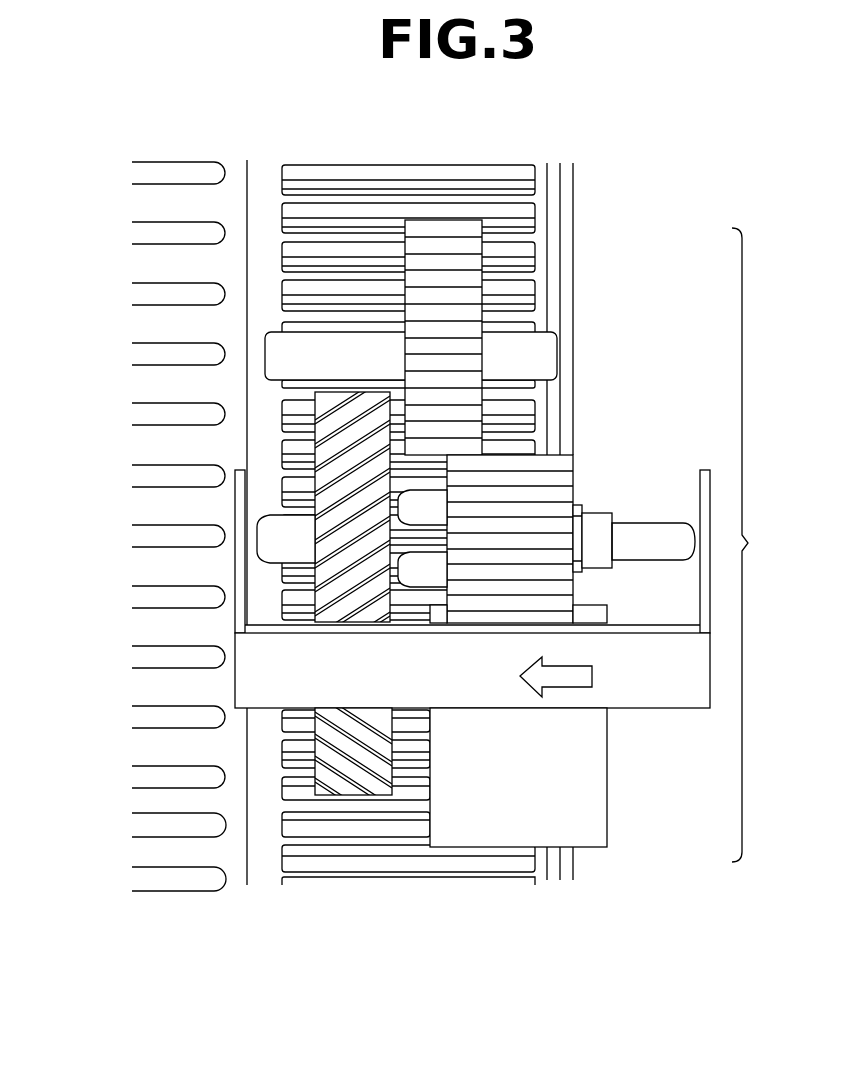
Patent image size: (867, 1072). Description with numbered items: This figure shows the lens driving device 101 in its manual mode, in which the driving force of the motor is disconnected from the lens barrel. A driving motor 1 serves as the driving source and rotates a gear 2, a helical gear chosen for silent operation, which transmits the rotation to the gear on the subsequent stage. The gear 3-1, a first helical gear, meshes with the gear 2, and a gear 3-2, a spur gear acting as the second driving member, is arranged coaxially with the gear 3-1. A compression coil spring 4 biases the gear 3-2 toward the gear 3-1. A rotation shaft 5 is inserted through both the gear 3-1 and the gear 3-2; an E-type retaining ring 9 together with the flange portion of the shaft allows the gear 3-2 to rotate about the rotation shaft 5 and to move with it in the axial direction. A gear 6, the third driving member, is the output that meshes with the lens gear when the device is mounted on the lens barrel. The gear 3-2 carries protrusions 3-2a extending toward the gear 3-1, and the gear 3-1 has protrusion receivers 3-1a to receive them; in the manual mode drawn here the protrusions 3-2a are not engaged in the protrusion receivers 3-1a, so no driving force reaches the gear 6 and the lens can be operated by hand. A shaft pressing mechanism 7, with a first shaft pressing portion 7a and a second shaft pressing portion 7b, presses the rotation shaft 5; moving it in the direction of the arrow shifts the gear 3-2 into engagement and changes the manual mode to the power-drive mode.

The driving motor 1 is at (583, 805).
The gear 2 is at (333, 778).
The gear 3-1 is at (330, 465).
The protrusion receivers 3-1a is at (365, 492).
The gear 3-2 is at (510, 482).
The protrusions 3-2a is at (427, 503).
The compression coil spring 4 is at (598, 514).
The rotation shaft 5 is at (256, 542).
The gear 6 is at (468, 247).
The shaft pressing mechanism 7 is at (658, 700).
The first shaft pressing portion 7a is at (241, 506).
The second shaft pressing portion 7b is at (704, 472).
The E-type retaining ring 9 is at (577, 570).
The driving device 101 is at (765, 545).